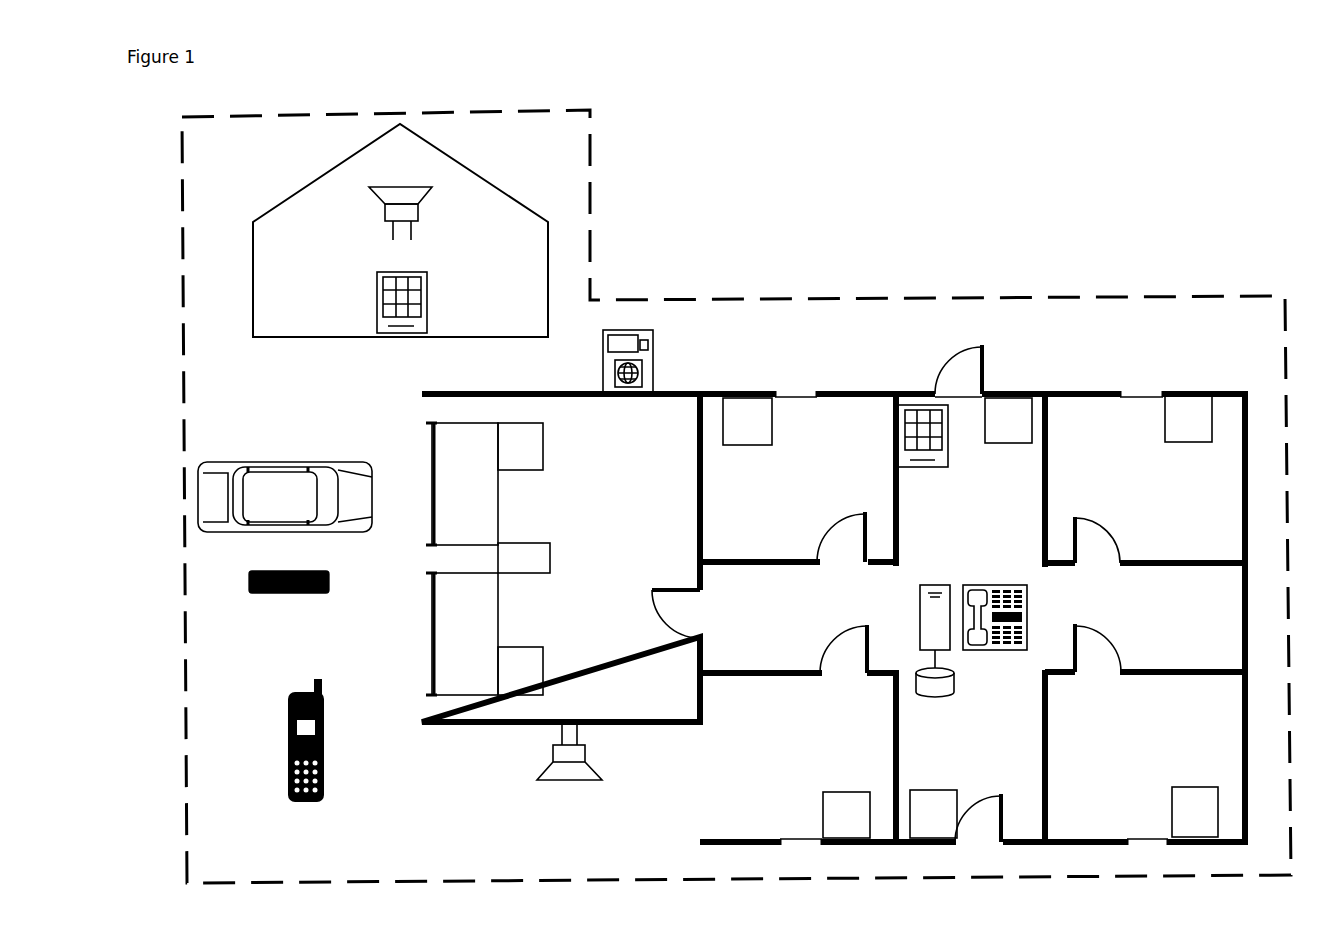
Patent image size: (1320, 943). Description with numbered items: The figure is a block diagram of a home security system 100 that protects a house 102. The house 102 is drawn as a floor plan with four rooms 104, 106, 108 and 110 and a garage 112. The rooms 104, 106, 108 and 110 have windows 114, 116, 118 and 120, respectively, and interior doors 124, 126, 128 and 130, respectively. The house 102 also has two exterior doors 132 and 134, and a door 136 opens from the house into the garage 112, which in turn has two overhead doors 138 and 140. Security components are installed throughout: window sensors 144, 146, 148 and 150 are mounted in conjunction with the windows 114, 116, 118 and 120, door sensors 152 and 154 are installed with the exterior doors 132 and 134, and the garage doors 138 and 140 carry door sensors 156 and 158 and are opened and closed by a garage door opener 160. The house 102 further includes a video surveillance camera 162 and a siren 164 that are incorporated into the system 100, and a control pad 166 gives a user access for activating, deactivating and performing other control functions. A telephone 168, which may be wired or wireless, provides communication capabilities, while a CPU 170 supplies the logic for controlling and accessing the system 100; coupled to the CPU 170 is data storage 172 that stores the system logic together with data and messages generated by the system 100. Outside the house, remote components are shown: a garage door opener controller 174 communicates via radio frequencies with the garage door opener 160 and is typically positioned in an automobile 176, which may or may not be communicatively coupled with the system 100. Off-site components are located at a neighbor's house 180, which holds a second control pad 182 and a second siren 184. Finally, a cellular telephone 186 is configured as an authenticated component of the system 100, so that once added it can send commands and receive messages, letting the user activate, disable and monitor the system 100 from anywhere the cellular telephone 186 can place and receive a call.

The home security system 100 is at (736, 481).
The house 102 is at (497, 728).
The room 104 is at (798, 459).
The room 106 is at (1145, 458).
The room 108 is at (798, 728).
The room 110 is at (1145, 727).
The garage 112 is at (561, 558).
The window 114 is at (793, 389).
The window 116 is at (1142, 389).
The window 118 is at (800, 838).
The window 120 is at (1152, 837).
The interior door 124 is at (848, 520).
The interior door 126 is at (1097, 521).
The interior door 128 is at (840, 638).
The interior door 130 is at (1100, 630).
The exterior door 132 is at (987, 362).
The exterior door 134 is at (980, 793).
The door 136 is at (672, 638).
The overhead door 138 is at (462, 484).
The overhead door 140 is at (462, 634).
The window sensor 144 is at (747, 421).
The window sensor 146 is at (1188, 418).
The window sensor 148 is at (846, 815).
The window sensor 150 is at (1195, 812).
The door sensor 152 is at (1008, 420).
The door sensor 154 is at (933, 814).
The door sensor 156 is at (520, 446).
The door sensor 158 is at (520, 671).
The garage door opener 160 is at (524, 558).
The video surveillance camera 162 is at (655, 363).
The siren 164 is at (585, 753).
The control pad 166 is at (923, 470).
The telephone 168 is at (993, 583).
The CPU 170 is at (918, 622).
The data storage 172 is at (937, 700).
The garage door opener controller 174 is at (294, 595).
The automobile 176 is at (279, 470).
The neighbor's house 180 is at (400, 230).
The second control pad 182 is at (377, 289).
The second siren 184 is at (418, 217).
The cellular telephone 186 is at (305, 804).